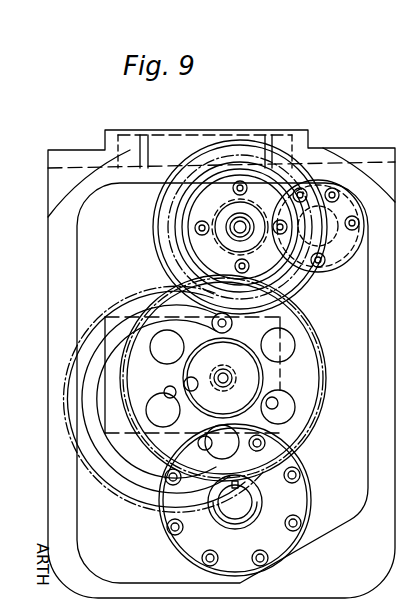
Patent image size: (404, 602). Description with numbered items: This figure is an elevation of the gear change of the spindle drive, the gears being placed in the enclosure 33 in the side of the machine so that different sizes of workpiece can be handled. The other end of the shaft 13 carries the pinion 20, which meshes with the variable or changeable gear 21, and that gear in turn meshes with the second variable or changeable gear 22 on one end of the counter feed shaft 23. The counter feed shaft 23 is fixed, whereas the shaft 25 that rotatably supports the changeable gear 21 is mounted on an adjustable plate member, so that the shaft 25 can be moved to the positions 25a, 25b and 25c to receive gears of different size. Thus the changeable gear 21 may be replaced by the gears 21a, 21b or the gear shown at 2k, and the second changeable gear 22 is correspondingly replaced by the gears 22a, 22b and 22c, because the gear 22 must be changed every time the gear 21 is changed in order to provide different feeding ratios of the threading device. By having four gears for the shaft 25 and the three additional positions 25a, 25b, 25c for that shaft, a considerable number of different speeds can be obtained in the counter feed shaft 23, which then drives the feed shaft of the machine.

The enclosure 33 is at (50, 247).
The counter feed shaft 23 is at (238, 210).
The second variable or changeable gear 22 is at (252, 175).
The replacement gear 22a is at (180, 205).
The replacement gear 22b is at (168, 222).
The replacement gear 22c is at (153, 243).
The shaft 25 is at (237, 361).
The shaft position 25a is at (222, 327).
The shaft position 25b is at (188, 382).
The shaft position 25c is at (168, 391).
The variable or changeable gear 21 is at (322, 406).
The clutch drum 2k is at (90, 465).
The replacement gear 21b is at (127, 482).
The replacement gear 21a is at (148, 483).
The shaft 13 is at (247, 493).
The pinion 20 is at (247, 520).